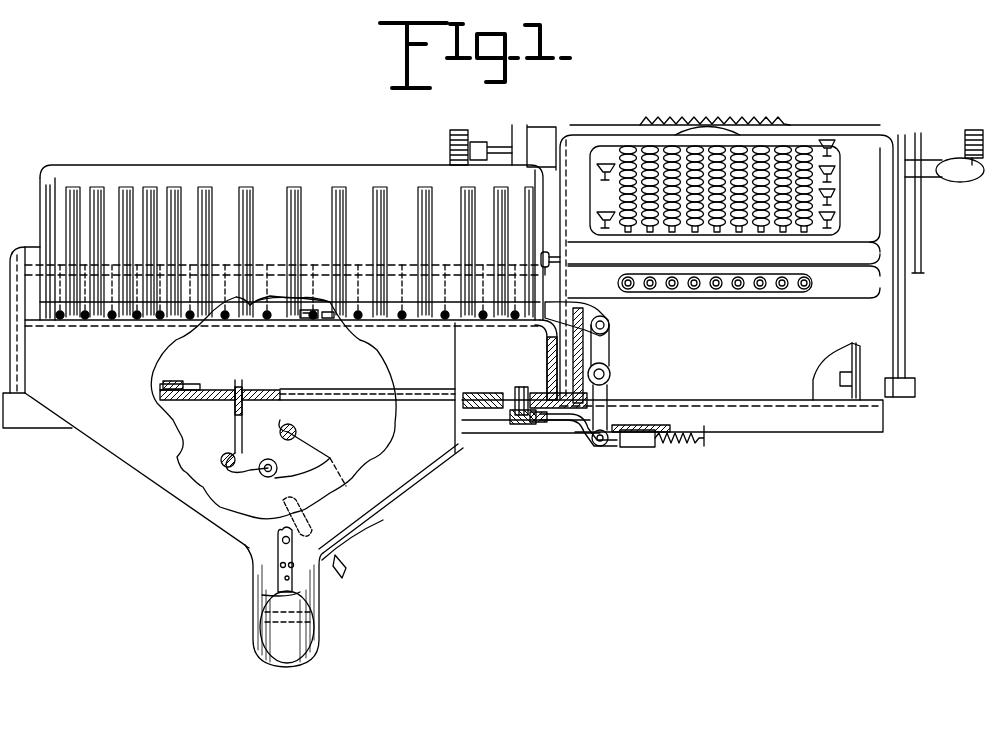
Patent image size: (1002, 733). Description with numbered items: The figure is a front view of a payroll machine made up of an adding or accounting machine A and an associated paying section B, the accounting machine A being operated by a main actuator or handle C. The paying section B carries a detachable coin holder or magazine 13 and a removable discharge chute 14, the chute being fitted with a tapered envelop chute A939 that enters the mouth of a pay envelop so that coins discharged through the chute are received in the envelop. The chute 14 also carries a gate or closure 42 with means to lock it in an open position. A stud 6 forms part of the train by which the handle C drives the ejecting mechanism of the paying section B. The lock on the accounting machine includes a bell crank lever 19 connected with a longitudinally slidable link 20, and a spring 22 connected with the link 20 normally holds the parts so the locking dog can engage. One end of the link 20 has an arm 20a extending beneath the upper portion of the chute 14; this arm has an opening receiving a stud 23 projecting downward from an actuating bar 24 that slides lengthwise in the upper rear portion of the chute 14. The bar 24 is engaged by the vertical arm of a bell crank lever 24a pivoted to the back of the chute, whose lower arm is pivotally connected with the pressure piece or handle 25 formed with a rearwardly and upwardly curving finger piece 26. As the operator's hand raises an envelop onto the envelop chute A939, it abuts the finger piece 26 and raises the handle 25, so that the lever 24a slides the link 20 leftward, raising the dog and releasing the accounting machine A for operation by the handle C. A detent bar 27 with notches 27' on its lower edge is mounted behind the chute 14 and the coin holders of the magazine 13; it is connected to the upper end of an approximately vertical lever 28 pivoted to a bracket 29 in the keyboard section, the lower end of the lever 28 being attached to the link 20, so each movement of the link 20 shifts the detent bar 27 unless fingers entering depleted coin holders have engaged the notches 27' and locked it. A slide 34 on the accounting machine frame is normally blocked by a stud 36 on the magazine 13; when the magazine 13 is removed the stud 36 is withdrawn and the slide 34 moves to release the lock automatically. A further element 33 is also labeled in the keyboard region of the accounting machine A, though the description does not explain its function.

The coin holder or magazine 13 is at (201, 222).
The paying section B is at (307, 180).
The stud 6 is at (133, 318).
The discharge chute 14 is at (453, 455).
The actuating bar 24 is at (287, 392).
The bell crank lever 24a is at (235, 438).
The pressure piece or handle 25 is at (290, 480).
The gate or closure 42 is at (360, 528).
The finger piece 26 is at (305, 627).
The envelop chute A939 is at (305, 592).
The adding or accounting machine A is at (840, 318).
The main actuator or handle C is at (955, 182).
The key 33 is at (594, 216).
The stud 36 is at (549, 262).
The slide 34 is at (549, 268).
The lever 28 is at (605, 348).
The bracket 29 is at (611, 376).
The stud 23 is at (520, 413).
The arm 20a is at (543, 424).
The link 20 is at (616, 443).
The bell crank lever 19 is at (633, 446).
The spring 22 is at (676, 446).
The detent bar 27 is at (288, 335).
The notches 27' is at (325, 336).